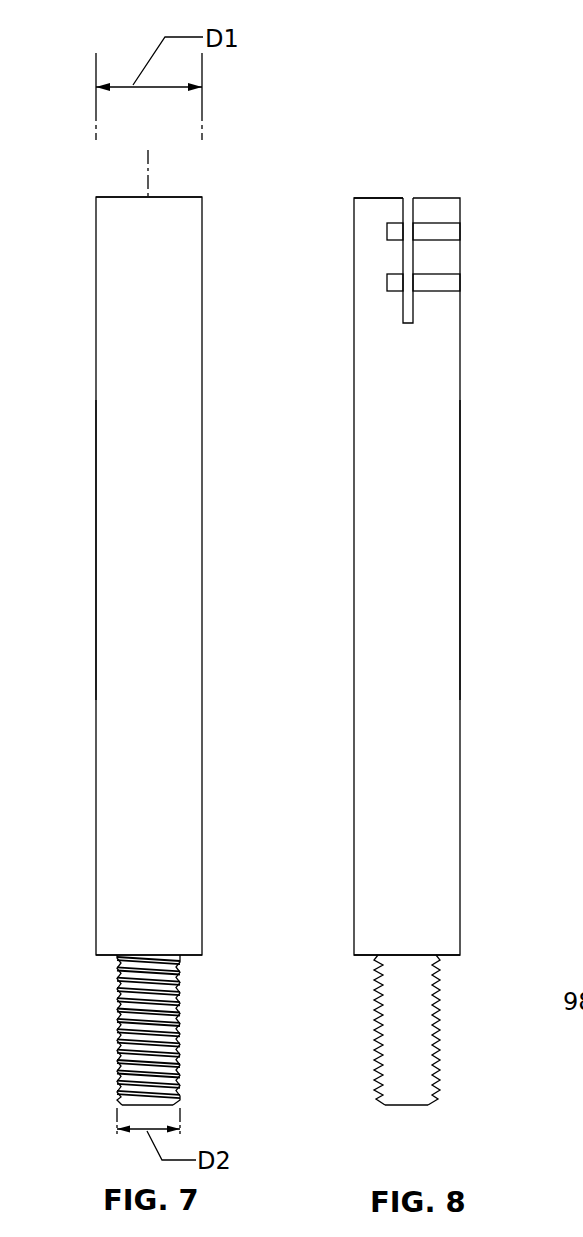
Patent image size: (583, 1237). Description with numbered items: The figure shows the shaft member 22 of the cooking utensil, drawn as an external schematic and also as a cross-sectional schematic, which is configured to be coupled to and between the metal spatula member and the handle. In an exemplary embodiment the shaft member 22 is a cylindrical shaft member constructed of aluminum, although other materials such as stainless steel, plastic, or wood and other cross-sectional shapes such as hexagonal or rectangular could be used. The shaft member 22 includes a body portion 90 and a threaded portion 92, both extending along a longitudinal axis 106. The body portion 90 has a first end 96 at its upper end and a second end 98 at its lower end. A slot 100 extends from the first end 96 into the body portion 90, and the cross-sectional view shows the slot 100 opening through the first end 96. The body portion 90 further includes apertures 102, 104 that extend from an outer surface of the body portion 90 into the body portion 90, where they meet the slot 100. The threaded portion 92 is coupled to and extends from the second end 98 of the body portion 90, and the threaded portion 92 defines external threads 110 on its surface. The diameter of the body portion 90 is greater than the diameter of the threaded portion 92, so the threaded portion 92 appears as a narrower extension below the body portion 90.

In FIG. 7, the shaft member 22 is at (200, 550).
In FIG. 8, the shaft member 22 is at (510, 550).
In FIG. 7, the body portion 90 is at (200, 576).
In FIG. 8, the body portion 90 is at (462, 576).
In FIG. 7, the threaded portion 92 is at (192, 1030).
In FIG. 8, the threaded portion 92 is at (456, 1030).
In FIG. 7, the first end 96 is at (114, 156).
In FIG. 8, the first end 96 is at (419, 164).
In FIG. 7, the second end 98 is at (110, 981).
In FIG. 8, the second end 98 is at (375, 985).
In FIG. 8, the slot 100 is at (333, 297).
In FIG. 8, the aperture 102 is at (468, 305).
In FIG. 8, the aperture 104 is at (468, 250).
In FIG. 7, the longitudinal axis 106 is at (209, 149).
In FIG. 7, the external threads 110 is at (204, 1080).
In FIG. 8, the external threads 110 is at (469, 1076).